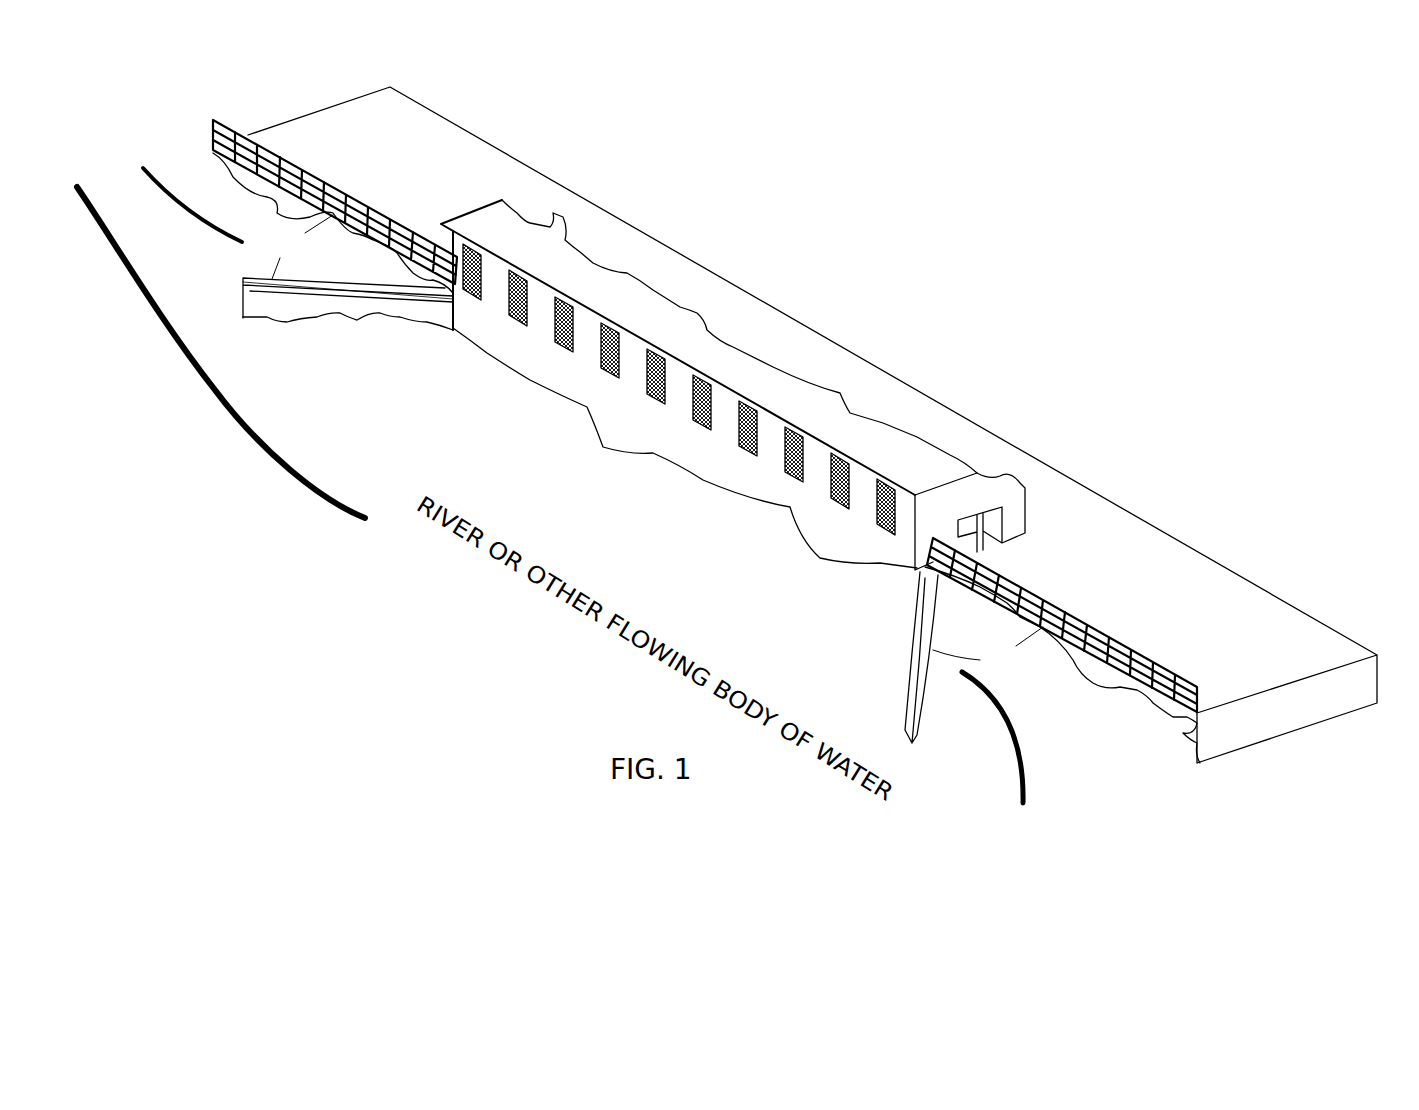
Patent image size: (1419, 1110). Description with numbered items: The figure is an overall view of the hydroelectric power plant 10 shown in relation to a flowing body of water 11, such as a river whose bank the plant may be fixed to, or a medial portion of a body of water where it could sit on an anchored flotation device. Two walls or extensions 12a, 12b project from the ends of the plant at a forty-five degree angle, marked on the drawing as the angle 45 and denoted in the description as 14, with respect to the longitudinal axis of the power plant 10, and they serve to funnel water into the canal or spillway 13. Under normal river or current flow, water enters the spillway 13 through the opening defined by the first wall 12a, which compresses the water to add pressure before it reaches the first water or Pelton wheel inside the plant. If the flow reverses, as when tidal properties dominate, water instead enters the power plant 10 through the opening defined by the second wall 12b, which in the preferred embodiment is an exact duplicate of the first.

The hydroelectric power plant 10 is at (770, 378).
The flowing body of water 11 is at (140, 198).
The first wall or extension 12a is at (340, 307).
The second wall or extension 12b is at (912, 655).
The canal or spillway 13 is at (393, 278).
The 45° angle 14 is at (268, 226).
The 45 degree angle 45 is at (655, 444).